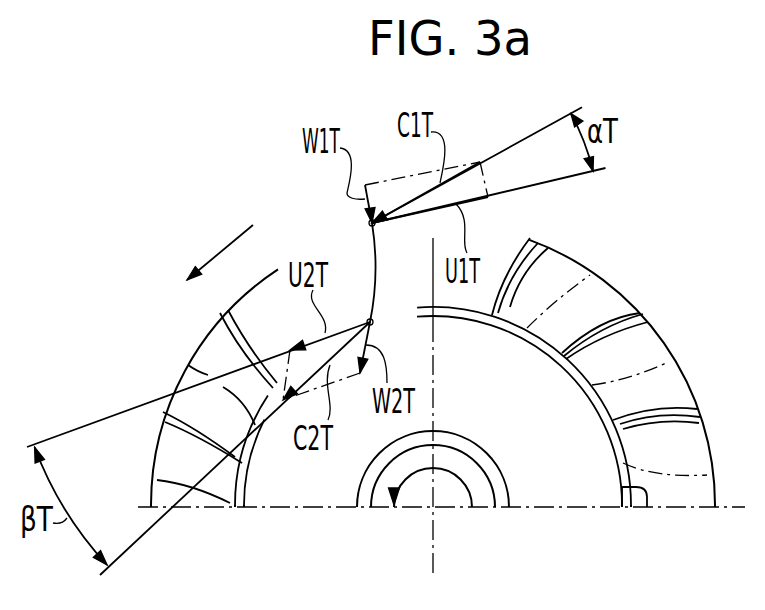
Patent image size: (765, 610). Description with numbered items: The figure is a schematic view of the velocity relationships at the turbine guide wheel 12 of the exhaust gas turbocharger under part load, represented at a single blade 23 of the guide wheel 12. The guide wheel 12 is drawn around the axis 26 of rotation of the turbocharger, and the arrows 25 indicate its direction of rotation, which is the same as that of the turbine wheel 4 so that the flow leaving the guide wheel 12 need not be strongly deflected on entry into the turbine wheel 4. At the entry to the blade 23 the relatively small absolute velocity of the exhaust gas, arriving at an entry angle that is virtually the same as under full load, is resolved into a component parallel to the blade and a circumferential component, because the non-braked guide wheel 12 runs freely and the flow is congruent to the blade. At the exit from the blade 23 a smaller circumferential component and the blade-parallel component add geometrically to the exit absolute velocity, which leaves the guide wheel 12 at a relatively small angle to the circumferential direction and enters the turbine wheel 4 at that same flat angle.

The turbine guide wheel 12 is at (667, 340).
The blade 23 is at (372, 270).
The arrow 25 is at (217, 247).
The axis of rotation 26 is at (437, 508).
The turbine wheel 4 is at (647, 507).